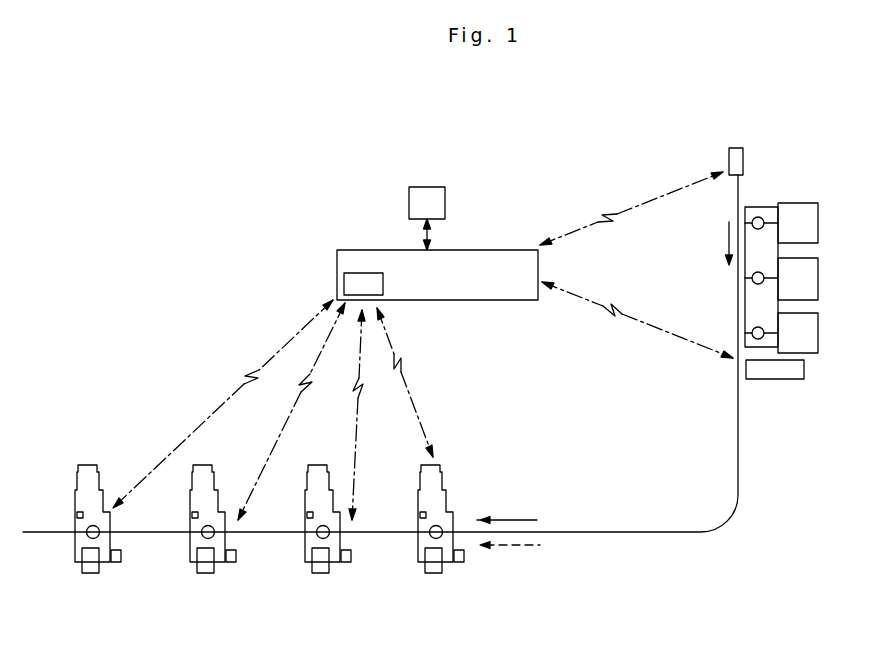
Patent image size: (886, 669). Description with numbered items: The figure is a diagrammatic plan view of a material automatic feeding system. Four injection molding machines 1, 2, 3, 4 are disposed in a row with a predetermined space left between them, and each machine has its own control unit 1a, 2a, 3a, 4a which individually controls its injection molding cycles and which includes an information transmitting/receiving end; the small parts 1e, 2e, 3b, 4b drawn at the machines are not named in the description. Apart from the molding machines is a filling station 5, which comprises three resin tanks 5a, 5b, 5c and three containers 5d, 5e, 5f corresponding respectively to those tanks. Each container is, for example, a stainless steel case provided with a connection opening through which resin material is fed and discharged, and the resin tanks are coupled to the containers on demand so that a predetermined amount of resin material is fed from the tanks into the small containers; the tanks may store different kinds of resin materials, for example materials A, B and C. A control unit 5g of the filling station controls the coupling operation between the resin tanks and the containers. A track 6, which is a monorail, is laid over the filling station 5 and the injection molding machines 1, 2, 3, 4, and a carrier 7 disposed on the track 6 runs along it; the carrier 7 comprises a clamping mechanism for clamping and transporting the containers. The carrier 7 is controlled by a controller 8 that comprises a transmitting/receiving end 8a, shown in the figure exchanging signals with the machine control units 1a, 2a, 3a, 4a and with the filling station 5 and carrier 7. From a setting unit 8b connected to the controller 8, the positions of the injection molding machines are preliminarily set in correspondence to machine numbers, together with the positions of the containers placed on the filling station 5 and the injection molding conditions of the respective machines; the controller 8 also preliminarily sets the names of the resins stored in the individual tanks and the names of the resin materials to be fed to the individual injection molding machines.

The injection molding machine 1 is at (82, 573).
The control unit 1a is at (122, 556).
The sensor of machine 1 1e is at (78, 519).
The injection molding machine 2 is at (197, 573).
The control unit 2a is at (237, 556).
The sensor of machine 2 2e is at (193, 519).
The injection molding machine 3 is at (312, 573).
The control unit 3a is at (352, 556).
The sensor of machine 3 3b is at (308, 519).
The injection molding machine 4 is at (425, 573).
The control unit 4a is at (465, 556).
The sensor of machine 4 4b is at (421, 519).
The filling station 5 is at (760, 207).
The resin tank 5a is at (818, 228).
The resin tank 5b is at (818, 283).
The resin tank 5c is at (818, 338).
The container 5d is at (752, 223).
The container 5e is at (752, 278).
The container 5f is at (752, 333).
The control unit 5g is at (783, 379).
The track 6 is at (739, 458).
The carrier 7 is at (743, 158).
The controller 8 is at (468, 250).
The transmitting/receiving end 8a is at (363, 273).
The setting unit 8b is at (438, 187).